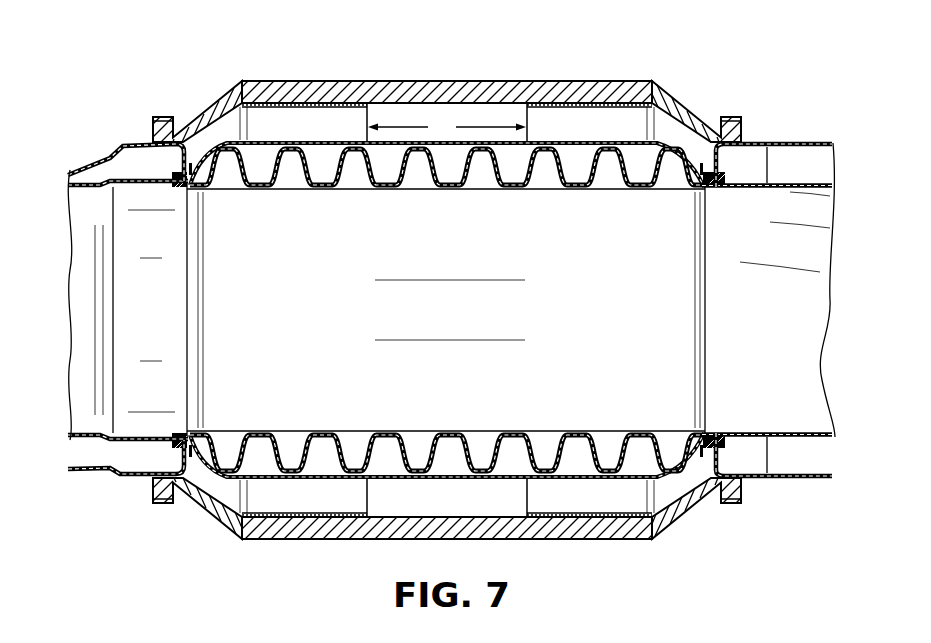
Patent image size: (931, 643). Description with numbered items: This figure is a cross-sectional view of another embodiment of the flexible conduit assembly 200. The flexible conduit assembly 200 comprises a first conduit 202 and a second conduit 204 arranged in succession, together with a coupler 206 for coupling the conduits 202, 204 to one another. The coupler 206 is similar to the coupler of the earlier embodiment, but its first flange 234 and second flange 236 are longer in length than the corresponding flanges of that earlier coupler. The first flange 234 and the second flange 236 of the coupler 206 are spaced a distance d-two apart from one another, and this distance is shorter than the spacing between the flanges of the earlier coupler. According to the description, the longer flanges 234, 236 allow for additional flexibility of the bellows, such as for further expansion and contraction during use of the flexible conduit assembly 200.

The flexible conduit assembly 200 is at (683, 70).
The first conduit 202 is at (805, 247).
The second conduit 204 is at (82, 320).
The coupler 206 is at (457, 76).
The first flange 234 is at (587, 93).
The second flange 236 is at (327, 82).